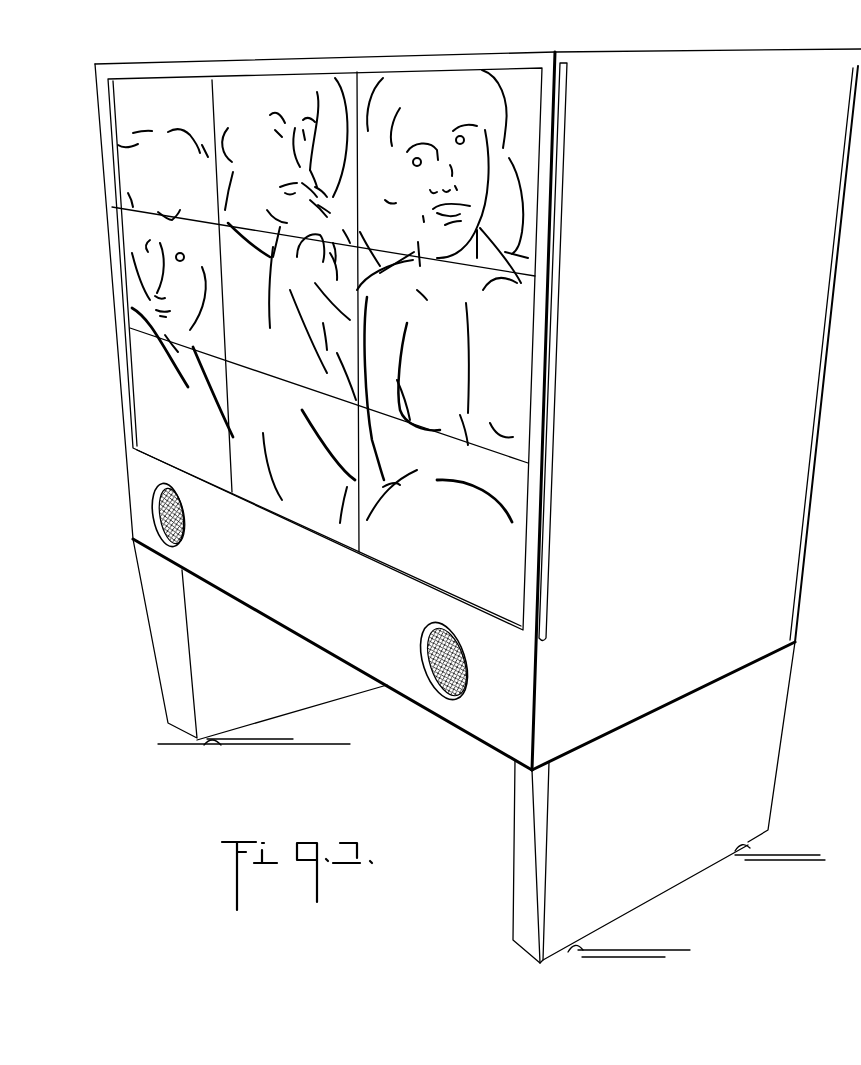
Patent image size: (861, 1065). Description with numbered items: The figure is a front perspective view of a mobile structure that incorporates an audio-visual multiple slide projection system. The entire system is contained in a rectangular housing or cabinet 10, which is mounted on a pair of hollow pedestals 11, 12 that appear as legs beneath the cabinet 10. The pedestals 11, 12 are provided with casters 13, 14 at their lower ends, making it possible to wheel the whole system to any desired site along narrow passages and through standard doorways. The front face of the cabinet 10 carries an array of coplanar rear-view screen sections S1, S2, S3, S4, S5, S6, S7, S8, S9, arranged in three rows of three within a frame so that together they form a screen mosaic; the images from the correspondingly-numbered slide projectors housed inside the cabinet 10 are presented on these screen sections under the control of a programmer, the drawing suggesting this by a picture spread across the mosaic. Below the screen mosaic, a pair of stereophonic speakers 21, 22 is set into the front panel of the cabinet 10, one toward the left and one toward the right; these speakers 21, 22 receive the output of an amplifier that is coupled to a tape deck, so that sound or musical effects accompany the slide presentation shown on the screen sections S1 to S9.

The cabinet 10 is at (780, 607).
The hollow pedestal 11 is at (312, 695).
The hollow pedestal 12 is at (752, 738).
The caster 13 is at (215, 746).
The caster 14 is at (582, 946).
The stereophonic speaker 21 is at (165, 533).
The stereophonic speaker 22 is at (437, 700).
The rear-view screen section S1 is at (435, 85).
The rear-view screen section S2 is at (283, 87).
The rear-view screen section S3 is at (163, 95).
The rear-view screen section S4 is at (515, 358).
The rear-view screen section S5 is at (258, 303).
The rear-view screen section S6 is at (140, 275).
The rear-view screen section S7 is at (507, 567).
The rear-view screen section S8 is at (303, 500).
The rear-view screen section S9 is at (142, 395).